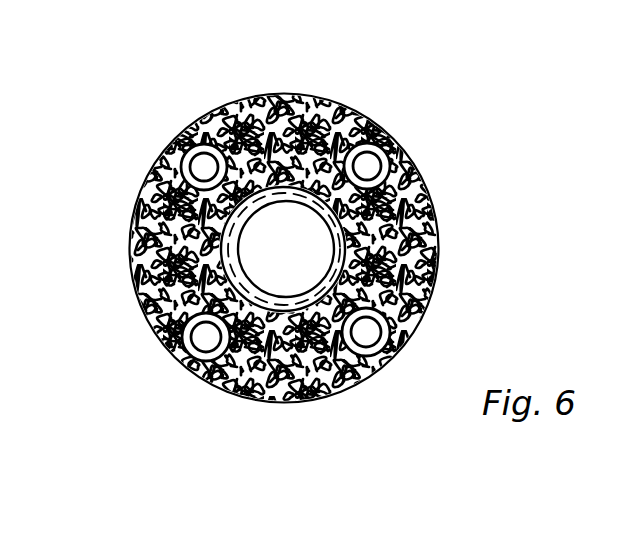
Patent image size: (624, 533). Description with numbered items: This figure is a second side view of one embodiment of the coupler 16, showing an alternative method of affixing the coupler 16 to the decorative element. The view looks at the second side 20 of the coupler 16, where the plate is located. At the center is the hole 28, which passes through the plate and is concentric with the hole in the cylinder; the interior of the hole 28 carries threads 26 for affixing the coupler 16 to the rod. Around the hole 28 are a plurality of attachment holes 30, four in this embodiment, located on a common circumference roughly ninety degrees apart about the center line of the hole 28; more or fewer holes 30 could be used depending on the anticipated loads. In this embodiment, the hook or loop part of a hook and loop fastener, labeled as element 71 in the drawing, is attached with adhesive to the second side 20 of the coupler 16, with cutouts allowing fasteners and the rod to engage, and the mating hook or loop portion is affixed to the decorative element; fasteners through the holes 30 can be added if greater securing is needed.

The coupler 16 is at (417, 165).
The second side 20 is at (349, 393).
The threads 26 is at (266, 300).
The hole 28 is at (292, 255).
The attachment holes 30 is at (382, 142).
The foam filler 71 is at (154, 254).